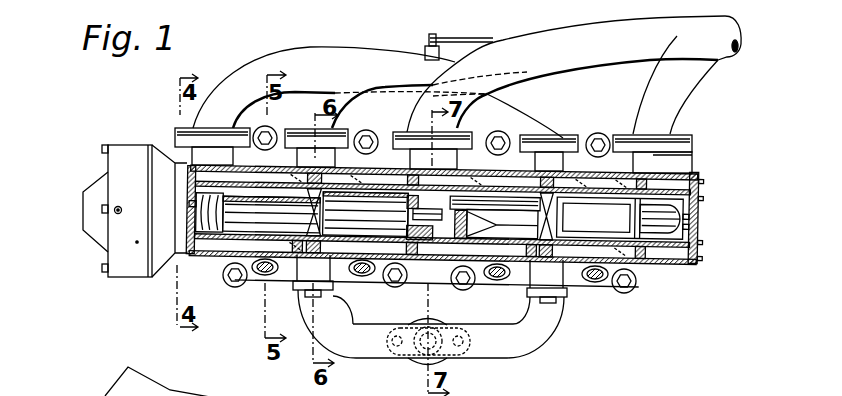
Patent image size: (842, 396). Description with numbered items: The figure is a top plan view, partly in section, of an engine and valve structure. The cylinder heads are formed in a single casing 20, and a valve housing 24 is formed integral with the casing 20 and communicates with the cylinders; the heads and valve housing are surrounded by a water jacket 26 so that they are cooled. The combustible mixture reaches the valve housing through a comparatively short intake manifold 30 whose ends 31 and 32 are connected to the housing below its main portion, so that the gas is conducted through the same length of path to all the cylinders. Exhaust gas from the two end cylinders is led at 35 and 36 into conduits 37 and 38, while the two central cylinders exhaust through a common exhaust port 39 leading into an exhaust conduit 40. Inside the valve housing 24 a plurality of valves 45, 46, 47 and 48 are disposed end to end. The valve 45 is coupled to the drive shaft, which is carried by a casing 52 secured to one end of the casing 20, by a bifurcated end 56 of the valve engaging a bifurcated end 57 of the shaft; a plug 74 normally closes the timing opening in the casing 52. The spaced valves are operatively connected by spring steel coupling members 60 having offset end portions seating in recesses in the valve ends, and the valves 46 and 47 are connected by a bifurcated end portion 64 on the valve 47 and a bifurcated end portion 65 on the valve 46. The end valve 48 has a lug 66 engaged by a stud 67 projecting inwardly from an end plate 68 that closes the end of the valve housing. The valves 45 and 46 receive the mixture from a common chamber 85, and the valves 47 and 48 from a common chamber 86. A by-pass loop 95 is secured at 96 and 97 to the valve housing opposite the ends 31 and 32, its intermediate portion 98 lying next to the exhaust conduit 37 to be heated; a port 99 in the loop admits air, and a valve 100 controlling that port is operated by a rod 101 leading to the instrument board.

The casing 20 is at (187, 173).
The valve housing 24 is at (672, 188).
The water jacket 26 is at (253, 182).
The intake manifold 30 is at (540, 335).
The intake manifold end 31 is at (302, 287).
The intake manifold end 32 is at (563, 293).
The exhaust outlet 35 is at (213, 157).
The exhaust outlet 36 is at (660, 165).
The exhaust conduit 37 is at (222, 82).
The exhaust conduit 38 is at (673, 107).
The common exhaust port 39 is at (455, 162).
The exhaust conduit 40 is at (553, 70).
The valve 45 is at (272, 214).
The valve 46 is at (366, 214).
The valve 47 is at (495, 217).
The end valve 48 is at (620, 218).
The casing 52 is at (120, 232).
The bifurcated end 56 is at (206, 213).
The bifurcated end 57 is at (185, 222).
The coupling member 60 is at (322, 205).
The bifurcated end portion 64 is at (432, 205).
The bifurcated end portion 65 is at (420, 252).
The lug 66 is at (697, 230).
The stud 67 is at (697, 218).
The end plate 68 is at (695, 263).
The plug 74 is at (118, 208).
The common chamber 85 is at (327, 250).
The common chamber 86 is at (523, 265).
The loop 95 is at (375, 72).
The loop connection 96 is at (303, 128).
The loop connection 97 is at (562, 137).
The intermediate portion of the loop 98 is at (417, 67).
The port 99 is at (483, 48).
The valve 100 is at (440, 36).
The rod 101 is at (483, 48).